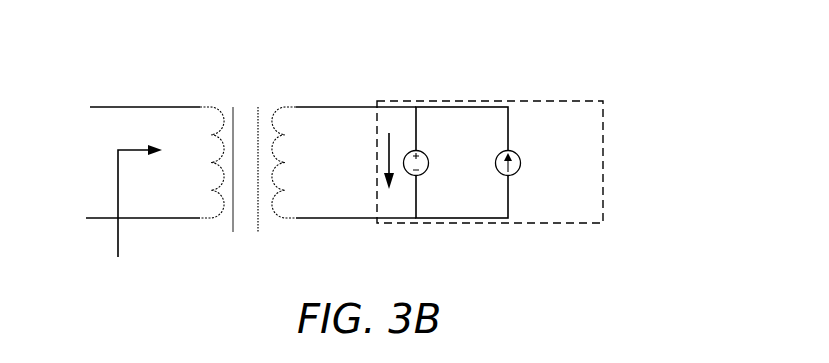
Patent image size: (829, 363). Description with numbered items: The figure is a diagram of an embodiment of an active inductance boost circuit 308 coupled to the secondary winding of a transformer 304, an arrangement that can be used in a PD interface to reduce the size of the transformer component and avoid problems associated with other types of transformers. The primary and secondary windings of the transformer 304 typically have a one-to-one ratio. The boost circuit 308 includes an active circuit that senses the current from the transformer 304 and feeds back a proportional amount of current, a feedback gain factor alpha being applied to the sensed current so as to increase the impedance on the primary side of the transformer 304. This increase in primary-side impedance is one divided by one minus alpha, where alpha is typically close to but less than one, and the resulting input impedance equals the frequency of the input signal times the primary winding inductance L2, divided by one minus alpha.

The transformer 304 is at (223, 102).
The active inductance boost circuit 308 is at (377, 100).
The inductance of the primary winding L2 is at (204, 162).